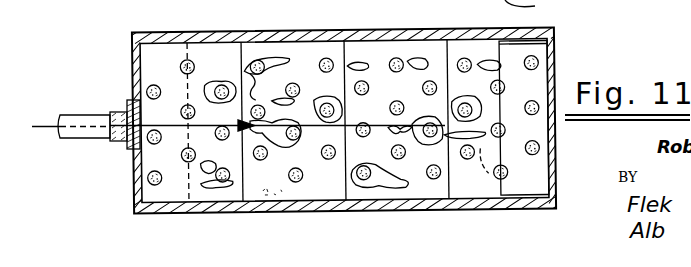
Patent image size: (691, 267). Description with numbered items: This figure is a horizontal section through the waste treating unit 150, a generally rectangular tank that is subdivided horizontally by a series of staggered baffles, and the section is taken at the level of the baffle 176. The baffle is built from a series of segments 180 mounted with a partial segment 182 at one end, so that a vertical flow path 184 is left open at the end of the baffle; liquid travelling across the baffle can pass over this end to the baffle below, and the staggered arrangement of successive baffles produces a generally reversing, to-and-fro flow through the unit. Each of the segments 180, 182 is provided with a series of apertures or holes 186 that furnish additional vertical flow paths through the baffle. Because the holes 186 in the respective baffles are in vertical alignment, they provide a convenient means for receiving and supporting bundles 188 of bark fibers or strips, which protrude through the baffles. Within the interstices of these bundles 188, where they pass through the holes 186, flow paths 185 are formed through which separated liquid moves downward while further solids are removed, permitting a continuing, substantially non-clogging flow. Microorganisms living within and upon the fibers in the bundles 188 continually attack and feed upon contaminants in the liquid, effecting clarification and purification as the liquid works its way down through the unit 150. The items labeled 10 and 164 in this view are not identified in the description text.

The flow direction arrow 10 is at (490, 0).
The waste treating unit 150 is at (556, 60).
The inlet nozzle 164 is at (93, 139).
The baffle 176 is at (535, 5).
The segments 180 is at (274, 197).
The partial segment 182 is at (475, 191).
The vertical flow path 184 is at (534, 182).
The flow paths 185 is at (405, 53).
The apertures or holes 186 is at (196, 64).
The bundles of bark fibers 188 is at (256, 62).